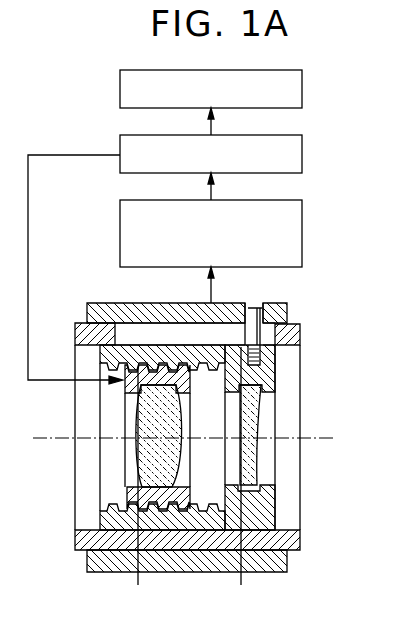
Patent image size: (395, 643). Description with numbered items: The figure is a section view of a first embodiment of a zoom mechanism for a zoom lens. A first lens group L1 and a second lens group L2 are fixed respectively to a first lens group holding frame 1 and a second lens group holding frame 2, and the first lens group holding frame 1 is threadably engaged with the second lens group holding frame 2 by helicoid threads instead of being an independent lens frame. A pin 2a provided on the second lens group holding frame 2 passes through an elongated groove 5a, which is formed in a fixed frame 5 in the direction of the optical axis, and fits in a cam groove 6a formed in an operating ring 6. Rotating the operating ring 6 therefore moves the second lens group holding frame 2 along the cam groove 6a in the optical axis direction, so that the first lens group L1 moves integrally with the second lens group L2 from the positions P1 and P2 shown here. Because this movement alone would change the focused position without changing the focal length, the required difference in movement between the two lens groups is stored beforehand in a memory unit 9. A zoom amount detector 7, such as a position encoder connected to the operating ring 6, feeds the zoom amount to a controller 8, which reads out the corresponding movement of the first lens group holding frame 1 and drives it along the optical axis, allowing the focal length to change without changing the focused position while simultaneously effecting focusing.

The first lens group holding frame 1 is at (133, 395).
The second lens group holding frame 2 is at (263, 372).
The pin 2a is at (263, 318).
The fixed frame 5 is at (300, 337).
The elongated groove 5a is at (147, 333).
The operating ring 6 is at (102, 303).
The cam groove 6a is at (258, 303).
The zoom amount detector 7 is at (293, 220).
The controller 8 is at (293, 152).
The memory unit 9 is at (293, 87).
The first lens group L1 is at (148, 450).
The second lens group L2 is at (252, 450).
The position of first lens group P1 is at (141, 489).
The position of second lens group P2 is at (244, 480).